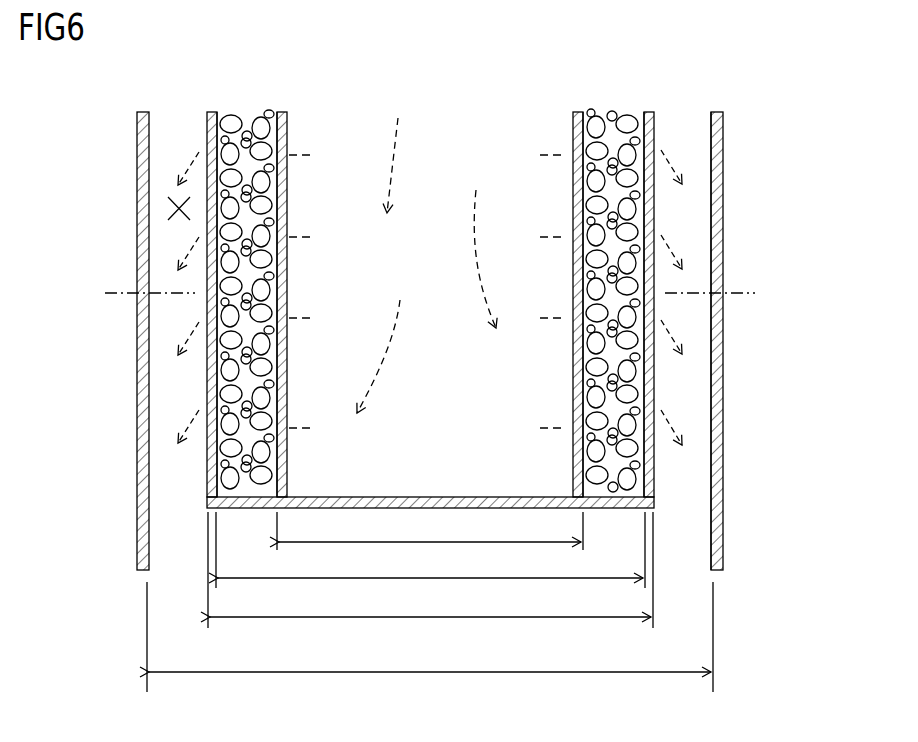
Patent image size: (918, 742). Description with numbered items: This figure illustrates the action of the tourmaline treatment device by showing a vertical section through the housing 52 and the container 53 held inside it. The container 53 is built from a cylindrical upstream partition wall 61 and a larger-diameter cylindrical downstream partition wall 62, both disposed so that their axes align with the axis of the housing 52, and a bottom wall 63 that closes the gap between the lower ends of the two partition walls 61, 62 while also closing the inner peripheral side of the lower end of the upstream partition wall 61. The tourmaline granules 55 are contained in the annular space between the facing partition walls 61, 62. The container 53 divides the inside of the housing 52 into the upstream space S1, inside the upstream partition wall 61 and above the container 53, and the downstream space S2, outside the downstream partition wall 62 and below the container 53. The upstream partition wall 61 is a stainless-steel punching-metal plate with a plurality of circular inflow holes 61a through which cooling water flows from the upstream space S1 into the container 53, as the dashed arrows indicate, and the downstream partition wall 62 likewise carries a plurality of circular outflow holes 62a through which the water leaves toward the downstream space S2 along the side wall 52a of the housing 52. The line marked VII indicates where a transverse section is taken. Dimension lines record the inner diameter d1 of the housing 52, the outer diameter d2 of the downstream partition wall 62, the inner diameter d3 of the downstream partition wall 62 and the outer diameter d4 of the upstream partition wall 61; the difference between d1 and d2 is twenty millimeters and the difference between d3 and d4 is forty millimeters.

The housing 52 is at (729, 317).
The inner surface of outer casing 52a is at (723, 355).
The container 53 is at (647, 98).
The tourmaline granules 55 is at (240, 114).
The upstream partition wall 61 is at (576, 122).
The inflow holes 61a is at (287, 128).
The downstream partition wall 62 is at (656, 129).
The outflow holes 62a is at (207, 136).
The bottom wall 63 is at (513, 497).
The upstream space S1 is at (462, 293).
The downstream space S2 is at (176, 208).
The section line VII is at (117, 291).
The inner diameter of the housing d1 is at (528, 672).
The outer diameter of the downstream partition wall d2 is at (500, 617).
The inner diameter of the downstream partition wall d3 is at (483, 578).
The outer diameter of the upstream partition wall d4 is at (455, 542).